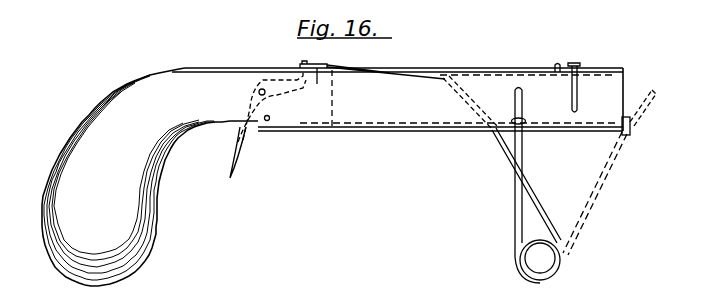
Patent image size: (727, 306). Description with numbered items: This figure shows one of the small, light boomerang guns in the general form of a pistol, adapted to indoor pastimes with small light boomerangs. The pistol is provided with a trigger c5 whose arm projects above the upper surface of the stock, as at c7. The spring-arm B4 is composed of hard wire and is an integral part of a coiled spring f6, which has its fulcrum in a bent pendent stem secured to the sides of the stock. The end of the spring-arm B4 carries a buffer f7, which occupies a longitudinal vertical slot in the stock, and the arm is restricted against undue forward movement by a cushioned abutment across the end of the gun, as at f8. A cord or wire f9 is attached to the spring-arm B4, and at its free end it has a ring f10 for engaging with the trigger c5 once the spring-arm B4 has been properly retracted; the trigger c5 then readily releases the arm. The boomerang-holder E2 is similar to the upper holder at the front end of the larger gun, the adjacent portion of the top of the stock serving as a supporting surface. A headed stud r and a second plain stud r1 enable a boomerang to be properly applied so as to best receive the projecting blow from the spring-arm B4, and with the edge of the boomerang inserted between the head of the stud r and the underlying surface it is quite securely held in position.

The boomerang-holder E2 is at (397, 89).
The headed stud r is at (574, 81).
The plain stud r1 is at (556, 67).
The trigger arm c7 is at (308, 63).
The cord or wire f9 is at (352, 68).
The ring f10 is at (319, 99).
The trigger c5 is at (268, 125).
The buffer f7 is at (470, 73).
The spring-arm B4 is at (493, 136).
The coiled spring f6 is at (541, 264).
The cushioned abutment f8 is at (632, 128).